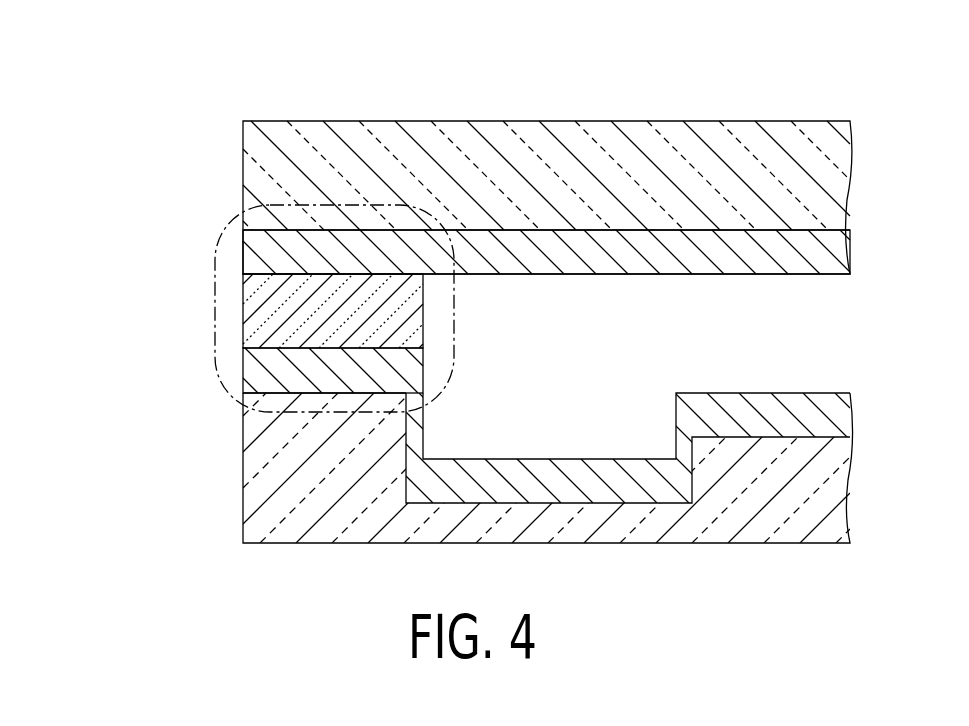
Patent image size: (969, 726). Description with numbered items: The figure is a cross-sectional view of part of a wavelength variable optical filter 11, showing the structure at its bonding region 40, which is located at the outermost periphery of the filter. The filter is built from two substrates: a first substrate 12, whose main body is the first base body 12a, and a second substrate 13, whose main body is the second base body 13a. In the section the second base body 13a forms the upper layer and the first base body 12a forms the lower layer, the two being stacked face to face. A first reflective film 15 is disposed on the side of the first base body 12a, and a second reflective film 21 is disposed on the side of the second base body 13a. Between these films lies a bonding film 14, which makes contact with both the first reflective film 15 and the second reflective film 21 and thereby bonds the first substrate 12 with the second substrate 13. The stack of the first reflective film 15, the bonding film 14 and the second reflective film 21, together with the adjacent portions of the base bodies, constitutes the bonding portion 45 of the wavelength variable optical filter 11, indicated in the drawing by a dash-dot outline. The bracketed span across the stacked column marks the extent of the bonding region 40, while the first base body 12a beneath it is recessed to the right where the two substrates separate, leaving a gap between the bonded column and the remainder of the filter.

The wavelength variable optical filter 11 is at (846, 75).
The first substrate 12 is at (117, 348).
The first base body 12a is at (243, 469).
The second substrate 13 is at (117, 122).
The second base body 13a is at (243, 167).
The bonding film 14 is at (243, 306).
The first reflective film 15 is at (243, 365).
The second reflective film 21 is at (243, 256).
The bonding region 40 is at (420, 93).
The bonding portion 45 is at (234, 223).